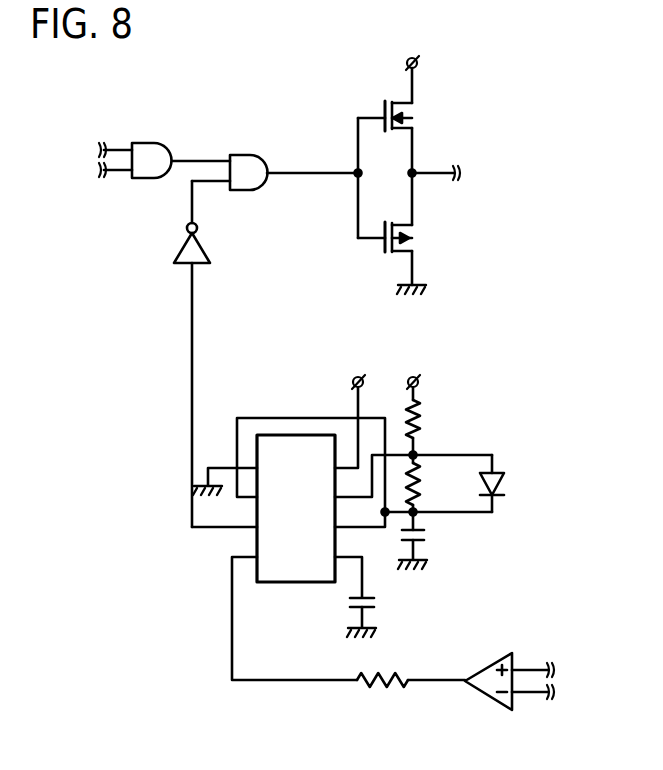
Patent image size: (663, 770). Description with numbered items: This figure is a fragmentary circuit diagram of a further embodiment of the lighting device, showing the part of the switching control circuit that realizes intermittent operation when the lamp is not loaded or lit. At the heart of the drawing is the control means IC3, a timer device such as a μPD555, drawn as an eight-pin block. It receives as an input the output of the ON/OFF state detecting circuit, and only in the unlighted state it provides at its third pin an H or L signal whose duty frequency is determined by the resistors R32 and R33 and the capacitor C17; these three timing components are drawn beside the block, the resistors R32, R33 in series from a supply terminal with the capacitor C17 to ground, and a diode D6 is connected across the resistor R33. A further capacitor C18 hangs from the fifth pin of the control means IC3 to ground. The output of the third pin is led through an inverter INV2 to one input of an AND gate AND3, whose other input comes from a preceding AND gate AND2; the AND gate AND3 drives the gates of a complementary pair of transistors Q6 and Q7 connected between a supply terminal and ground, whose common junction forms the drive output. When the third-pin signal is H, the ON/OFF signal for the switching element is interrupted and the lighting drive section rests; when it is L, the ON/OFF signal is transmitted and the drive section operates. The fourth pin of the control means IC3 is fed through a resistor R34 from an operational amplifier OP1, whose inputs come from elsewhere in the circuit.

The AND gate AND2 is at (164, 140).
The AND gate AND3 is at (275, 153).
The inverter INV2 is at (232, 354).
The transistor Q6 is at (412, 114).
The transistor Q7 is at (411, 206).
The control means IC3 is at (302, 527).
The capacitor C17 is at (438, 540).
The capacitor C18 is at (388, 613).
The resistor R32 is at (442, 417).
The resistor R33 is at (442, 485).
The resistor R34 is at (411, 701).
The diode D6 is at (480, 483).
The operational amplifier OP1 is at (509, 700).